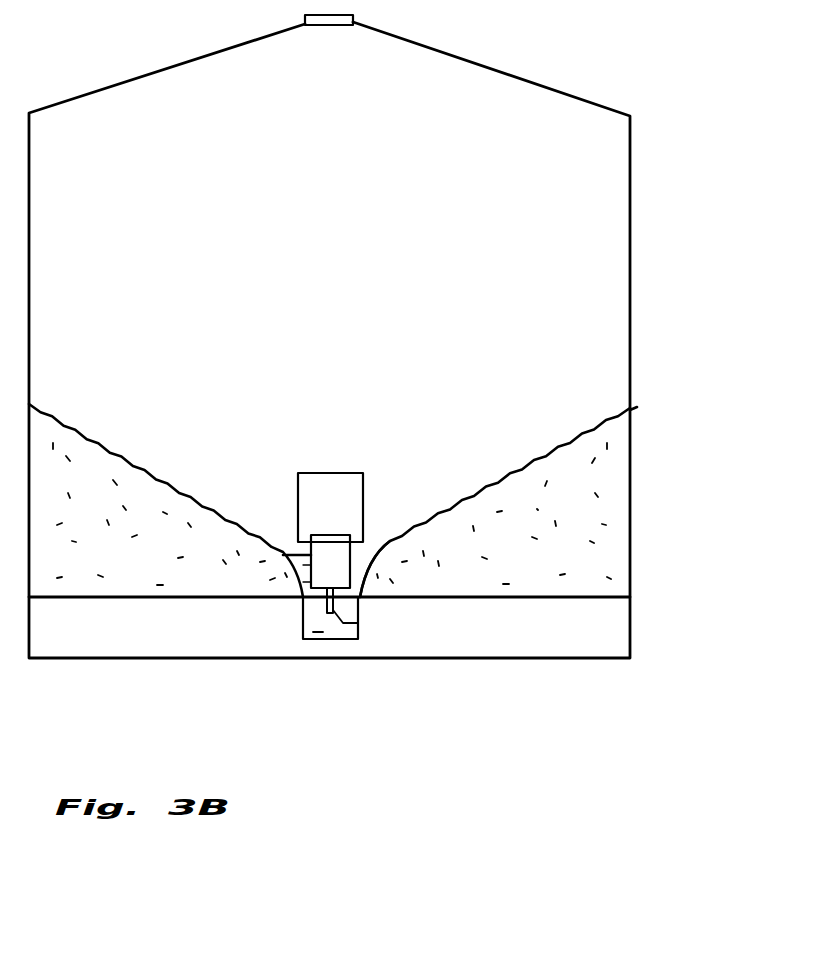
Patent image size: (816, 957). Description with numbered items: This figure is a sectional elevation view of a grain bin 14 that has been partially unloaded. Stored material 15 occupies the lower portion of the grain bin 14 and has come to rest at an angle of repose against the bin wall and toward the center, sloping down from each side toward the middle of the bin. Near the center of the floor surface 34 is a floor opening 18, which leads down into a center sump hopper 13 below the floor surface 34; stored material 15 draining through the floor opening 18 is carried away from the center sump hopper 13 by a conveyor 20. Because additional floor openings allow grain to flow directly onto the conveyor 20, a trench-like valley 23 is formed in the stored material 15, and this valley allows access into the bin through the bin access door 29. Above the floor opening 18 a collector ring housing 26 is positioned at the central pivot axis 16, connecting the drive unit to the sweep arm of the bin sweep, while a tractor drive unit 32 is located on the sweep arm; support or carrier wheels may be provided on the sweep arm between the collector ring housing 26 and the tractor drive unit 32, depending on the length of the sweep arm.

The center sump hopper 13 is at (306, 624).
The grain bin 14 is at (630, 244).
The stored material 15 is at (98, 517).
The pivot axis 16 is at (329, 620).
The floor opening 18 is at (344, 600).
The conveyor 20 is at (325, 632).
The trench-like valley 23 is at (371, 546).
The collector ring housing 26 is at (328, 547).
The bin access door 29 is at (328, 492).
The tractor drive unit 32 is at (312, 573).
The floor surface 34 is at (603, 597).